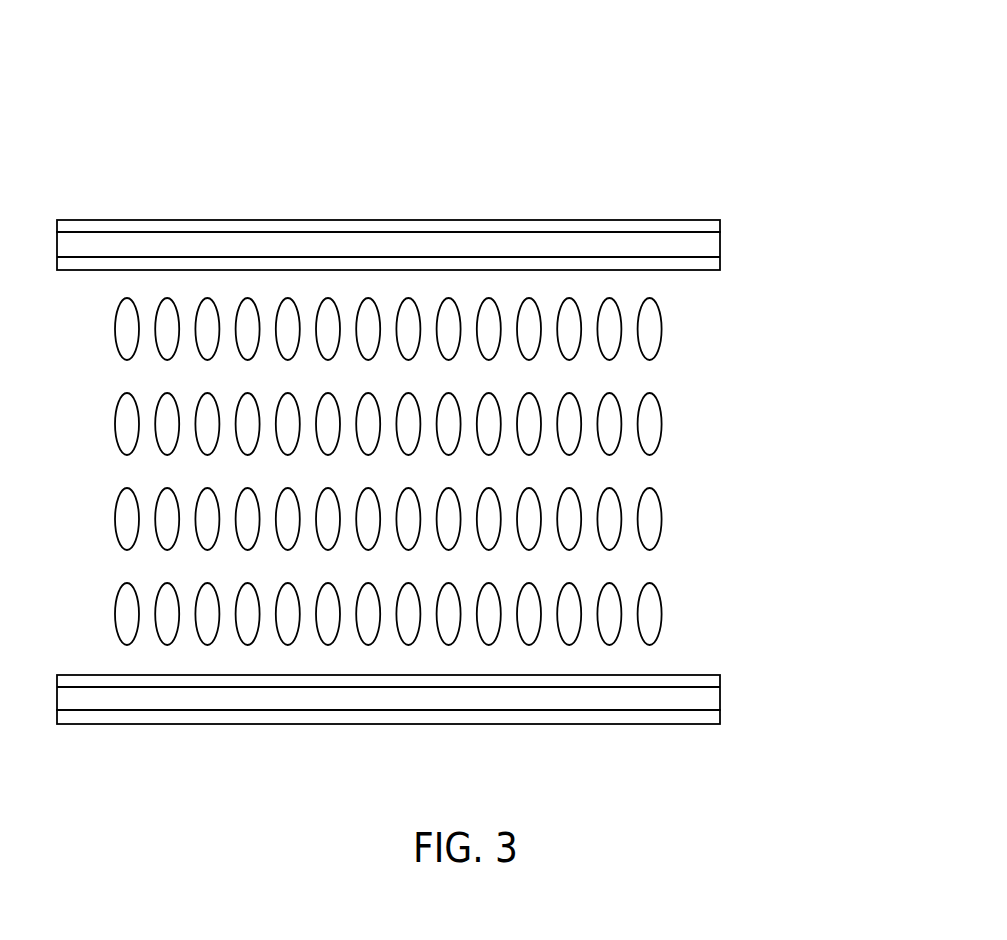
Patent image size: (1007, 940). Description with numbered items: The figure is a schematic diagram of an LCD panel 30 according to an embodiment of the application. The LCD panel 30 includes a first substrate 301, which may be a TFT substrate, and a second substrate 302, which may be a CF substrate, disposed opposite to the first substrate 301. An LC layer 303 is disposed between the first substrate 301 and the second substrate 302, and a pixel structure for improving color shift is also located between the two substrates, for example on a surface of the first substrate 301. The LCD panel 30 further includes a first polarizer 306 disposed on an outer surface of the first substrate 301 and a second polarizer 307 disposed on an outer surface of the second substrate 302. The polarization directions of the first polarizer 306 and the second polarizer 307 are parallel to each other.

The LCD panel 30 is at (586, 127).
The first substrate 301 is at (703, 699).
The second substrate 302 is at (703, 246).
The LC layer 303 is at (726, 308).
The first polarizer 306 is at (700, 722).
The second polarizer 307 is at (702, 222).